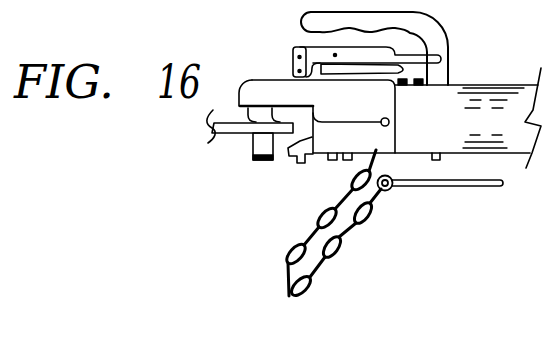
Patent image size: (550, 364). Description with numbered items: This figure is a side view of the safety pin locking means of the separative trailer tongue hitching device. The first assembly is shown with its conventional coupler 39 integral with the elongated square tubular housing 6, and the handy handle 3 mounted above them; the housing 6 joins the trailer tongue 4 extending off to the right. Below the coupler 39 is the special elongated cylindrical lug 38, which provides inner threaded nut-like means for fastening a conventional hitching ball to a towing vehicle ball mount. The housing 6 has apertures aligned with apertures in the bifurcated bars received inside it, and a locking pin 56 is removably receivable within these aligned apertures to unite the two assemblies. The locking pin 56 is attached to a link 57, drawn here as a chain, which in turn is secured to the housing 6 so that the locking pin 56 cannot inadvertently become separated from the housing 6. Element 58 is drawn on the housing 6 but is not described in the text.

The handle 3 is at (302, 22).
The tongue 4 is at (460, 118).
The housing 6 is at (332, 138).
The elongated cylindrical lug 38 is at (250, 148).
The coupler 39 is at (271, 80).
The locking pin 56 is at (428, 188).
The link 57 is at (333, 257).
The pivot pin 58 is at (388, 125).